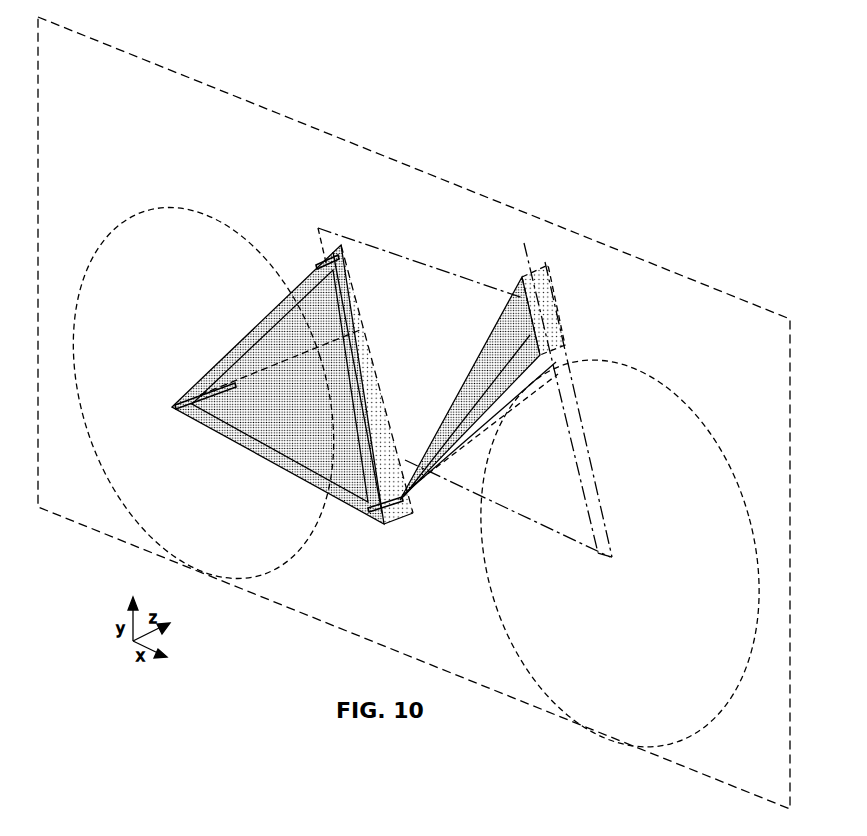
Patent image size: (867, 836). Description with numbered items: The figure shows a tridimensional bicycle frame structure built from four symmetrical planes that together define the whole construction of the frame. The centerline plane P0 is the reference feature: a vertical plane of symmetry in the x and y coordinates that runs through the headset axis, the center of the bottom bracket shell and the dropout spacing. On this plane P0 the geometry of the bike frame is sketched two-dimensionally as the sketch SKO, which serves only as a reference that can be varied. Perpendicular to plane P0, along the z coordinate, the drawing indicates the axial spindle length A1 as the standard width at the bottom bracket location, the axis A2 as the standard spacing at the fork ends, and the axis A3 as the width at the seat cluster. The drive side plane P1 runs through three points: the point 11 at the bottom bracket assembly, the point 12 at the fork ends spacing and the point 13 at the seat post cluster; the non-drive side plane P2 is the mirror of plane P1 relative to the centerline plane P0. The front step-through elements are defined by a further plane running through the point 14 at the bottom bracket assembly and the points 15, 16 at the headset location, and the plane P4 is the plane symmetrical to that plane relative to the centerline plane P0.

The point at the bottom bracket assembly 11 is at (350, 508).
The point at the fork ends spacing 12 is at (170, 405).
The point at the seat post cluster 13 is at (318, 262).
The point at the bottom bracket assembly 14 is at (393, 508).
The point at the headset location 15 is at (525, 283).
The point at the headset location 16 is at (553, 359).
The centerline plane P0 is at (237, 93).
The drive side plane P1 is at (280, 473).
The non-drive side plane P2 is at (362, 317).
The symmetrical plane of P3 P4 is at (562, 308).
The axial spindle length A1 is at (380, 512).
The fork ends spacing axis A2 is at (200, 403).
The seat cluster width axis A3 is at (323, 262).
The two-dimensional sketch of bike frame geometry SKO is at (588, 522).